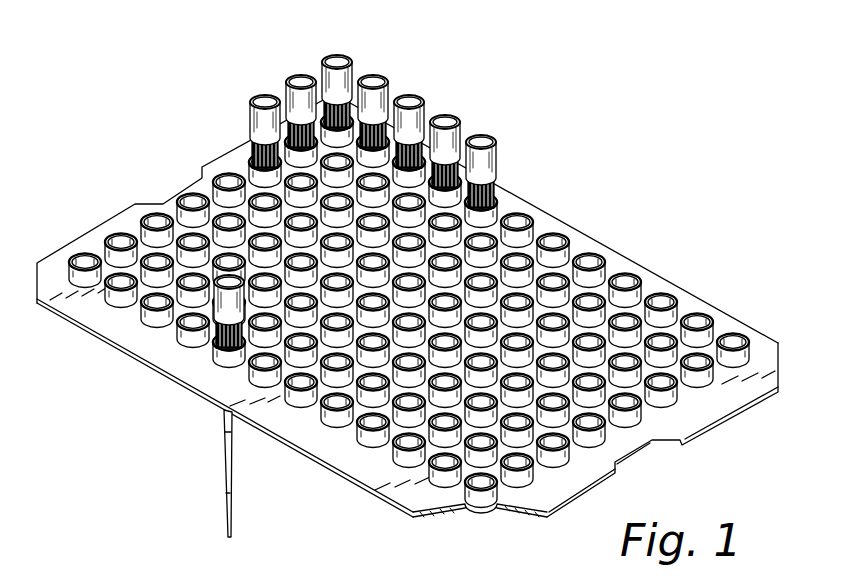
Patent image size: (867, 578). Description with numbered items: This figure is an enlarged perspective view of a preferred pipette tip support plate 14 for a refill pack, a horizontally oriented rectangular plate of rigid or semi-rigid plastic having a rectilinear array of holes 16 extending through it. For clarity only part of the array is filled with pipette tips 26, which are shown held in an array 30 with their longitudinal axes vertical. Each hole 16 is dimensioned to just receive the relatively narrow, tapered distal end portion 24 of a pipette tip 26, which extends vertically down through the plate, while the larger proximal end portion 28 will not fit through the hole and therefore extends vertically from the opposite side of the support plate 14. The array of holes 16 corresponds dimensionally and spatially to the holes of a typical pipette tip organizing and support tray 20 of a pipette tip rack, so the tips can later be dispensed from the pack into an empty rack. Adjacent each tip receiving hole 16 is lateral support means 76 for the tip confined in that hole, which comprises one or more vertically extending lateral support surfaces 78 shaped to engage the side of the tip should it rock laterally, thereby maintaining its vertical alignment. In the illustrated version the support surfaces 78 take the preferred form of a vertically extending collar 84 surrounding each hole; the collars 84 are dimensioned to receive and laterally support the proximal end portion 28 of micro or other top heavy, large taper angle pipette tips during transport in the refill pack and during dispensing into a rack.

The support plate 14 is at (720, 402).
The hole 16 is at (486, 506).
The pipette tip organizing and support tray 20 is at (624, 430).
The distal end portion 24 is at (226, 470).
The pipette tip 26 is at (545, 146).
The proximal end portion 28 is at (333, 53).
The array 30 is at (326, 213).
The lateral support means 76 is at (647, 284).
The lateral support surface 78 is at (610, 259).
The collar 84 is at (247, 167).